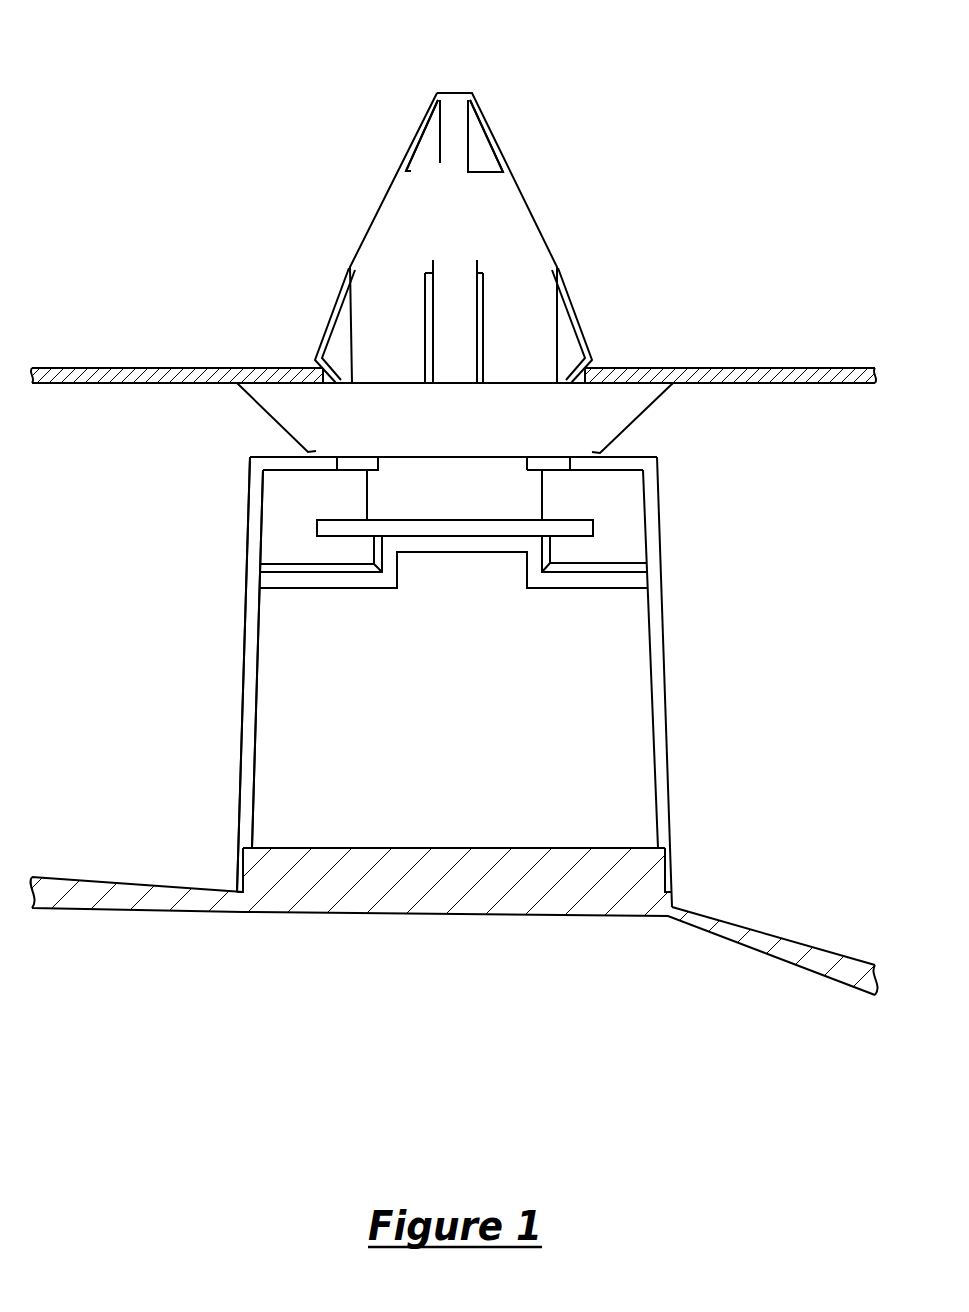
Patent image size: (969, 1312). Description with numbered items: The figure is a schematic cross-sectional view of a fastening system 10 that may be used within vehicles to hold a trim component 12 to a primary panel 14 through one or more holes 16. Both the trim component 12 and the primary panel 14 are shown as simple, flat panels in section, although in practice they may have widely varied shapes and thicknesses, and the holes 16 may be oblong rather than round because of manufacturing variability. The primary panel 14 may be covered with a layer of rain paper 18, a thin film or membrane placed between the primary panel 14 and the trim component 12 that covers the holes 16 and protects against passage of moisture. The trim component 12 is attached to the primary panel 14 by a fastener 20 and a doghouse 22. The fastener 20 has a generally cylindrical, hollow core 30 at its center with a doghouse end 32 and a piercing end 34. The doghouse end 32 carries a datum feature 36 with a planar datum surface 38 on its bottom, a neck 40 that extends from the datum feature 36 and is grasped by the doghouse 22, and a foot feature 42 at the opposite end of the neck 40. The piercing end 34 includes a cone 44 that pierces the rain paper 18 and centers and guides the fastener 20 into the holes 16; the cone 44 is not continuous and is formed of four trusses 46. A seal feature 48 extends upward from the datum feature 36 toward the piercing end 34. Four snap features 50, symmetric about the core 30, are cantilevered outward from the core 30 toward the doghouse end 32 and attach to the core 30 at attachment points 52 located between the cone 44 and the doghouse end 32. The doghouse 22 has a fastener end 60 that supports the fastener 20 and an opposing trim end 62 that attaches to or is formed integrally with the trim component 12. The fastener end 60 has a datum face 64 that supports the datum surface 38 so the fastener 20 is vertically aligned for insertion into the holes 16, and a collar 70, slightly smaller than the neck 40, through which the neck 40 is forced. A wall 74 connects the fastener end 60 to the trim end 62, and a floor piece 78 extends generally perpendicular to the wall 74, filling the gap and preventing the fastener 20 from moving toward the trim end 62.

The fastening system 10 is at (99, 83).
The trim component 12 is at (295, 898).
The primary panel 14 is at (120, 376).
The holes 16 is at (582, 362).
The rain paper 18 is at (763, 368).
The fastener 20 is at (626, 160).
The doghouse 22 is at (799, 660).
The core 30 is at (527, 357).
The doghouse end 32 is at (191, 412).
The piercing end 34 is at (336, 122).
The datum feature 36 is at (300, 446).
The datum surface 38 is at (600, 457).
The neck 40 is at (427, 504).
The foot feature 42 is at (455, 537).
The cone 44 is at (453, 127).
The trusses 46 is at (420, 133).
The seal feature 48 is at (643, 390).
The snap features 50 is at (336, 305).
The attachment points 52 is at (350, 268).
The fastener end 60 is at (181, 519).
The trim end 62 is at (131, 817).
The datum face 64 is at (648, 454).
The collar 70 is at (383, 462).
The wall 74 is at (246, 716).
The floor piece 78 is at (339, 590).